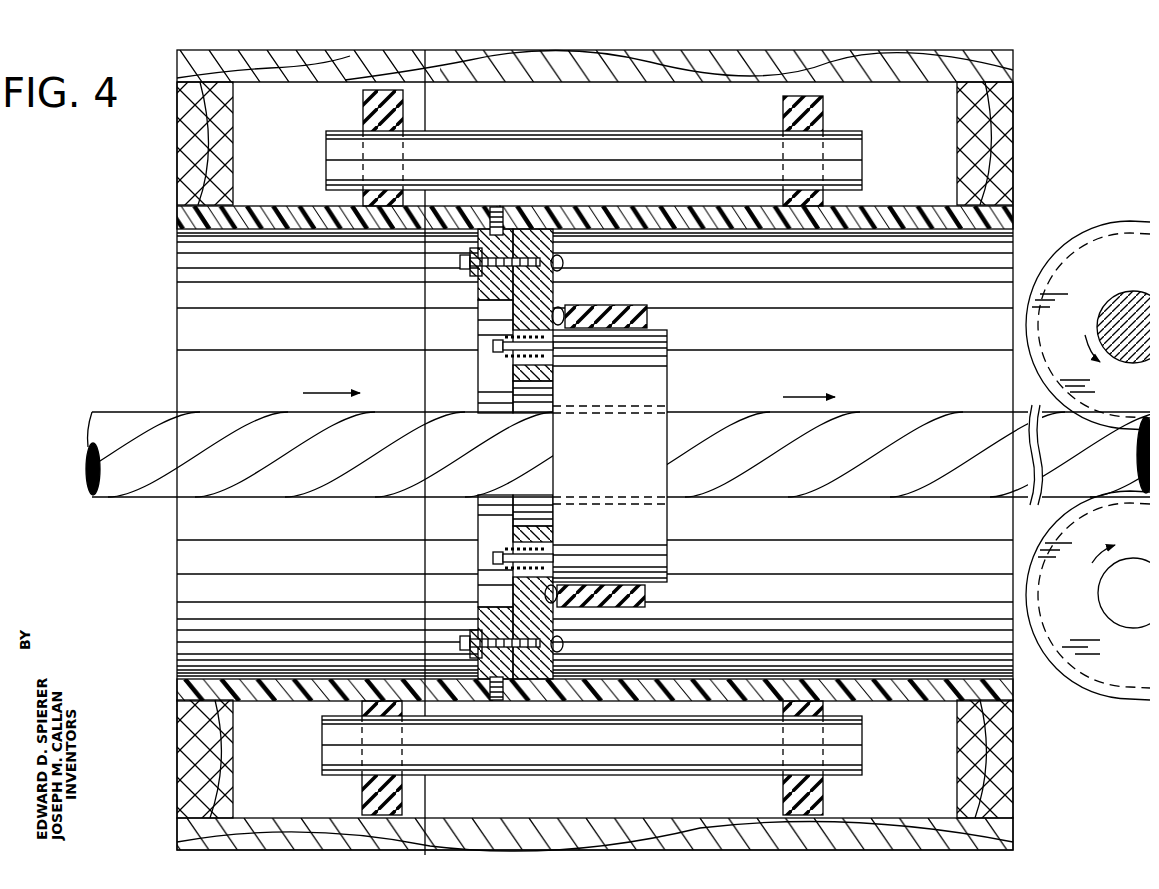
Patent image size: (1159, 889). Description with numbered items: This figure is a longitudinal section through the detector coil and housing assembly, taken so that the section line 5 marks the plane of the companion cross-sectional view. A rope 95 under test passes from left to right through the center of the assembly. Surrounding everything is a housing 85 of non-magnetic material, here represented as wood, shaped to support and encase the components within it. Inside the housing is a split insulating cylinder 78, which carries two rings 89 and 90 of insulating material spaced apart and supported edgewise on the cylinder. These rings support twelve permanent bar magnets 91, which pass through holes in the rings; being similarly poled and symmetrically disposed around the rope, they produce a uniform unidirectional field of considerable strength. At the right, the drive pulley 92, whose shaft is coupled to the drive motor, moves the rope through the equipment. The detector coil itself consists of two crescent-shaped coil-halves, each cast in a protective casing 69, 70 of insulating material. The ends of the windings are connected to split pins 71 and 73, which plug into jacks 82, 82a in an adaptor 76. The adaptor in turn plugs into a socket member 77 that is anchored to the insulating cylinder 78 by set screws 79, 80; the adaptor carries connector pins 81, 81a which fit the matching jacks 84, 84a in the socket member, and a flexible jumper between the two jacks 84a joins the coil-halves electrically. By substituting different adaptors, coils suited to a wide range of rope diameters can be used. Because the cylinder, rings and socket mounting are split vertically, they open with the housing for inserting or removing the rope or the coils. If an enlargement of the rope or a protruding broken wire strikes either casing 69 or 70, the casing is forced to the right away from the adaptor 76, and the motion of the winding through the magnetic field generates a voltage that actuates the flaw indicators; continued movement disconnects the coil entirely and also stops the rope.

The housing 85 is at (176, 170).
The insulating cylinder 78 is at (372, 229).
The section line 5- 5 is at (424, 100).
The ring 89 is at (364, 792).
The ring 90 is at (823, 790).
The permanent magnets 91 is at (667, 140).
The drive pulley 92 is at (1100, 230).
The twisted strand rod 95 is at (146, 412).
The socket member 77 is at (485, 292).
The coil casing 70 is at (665, 505).
The coil casing 69 is at (662, 330).
The adaptor 76 is at (590, 284).
The set screw 79 is at (500, 232).
The set screw 80 is at (500, 698).
The connector pin 81 is at (476, 260).
The jack 84 is at (470, 272).
The split pin 71 is at (497, 352).
The jack 82 is at (500, 345).
The split pin 73 is at (495, 556).
The jack 82a is at (500, 548).
The connector pin 81a is at (466, 643).
The jack 84a is at (478, 632).